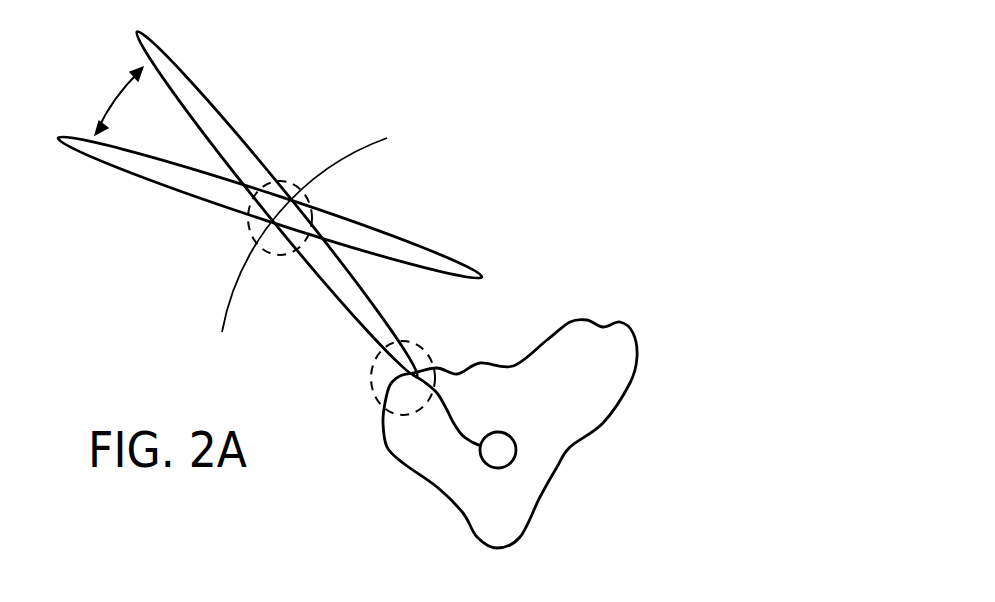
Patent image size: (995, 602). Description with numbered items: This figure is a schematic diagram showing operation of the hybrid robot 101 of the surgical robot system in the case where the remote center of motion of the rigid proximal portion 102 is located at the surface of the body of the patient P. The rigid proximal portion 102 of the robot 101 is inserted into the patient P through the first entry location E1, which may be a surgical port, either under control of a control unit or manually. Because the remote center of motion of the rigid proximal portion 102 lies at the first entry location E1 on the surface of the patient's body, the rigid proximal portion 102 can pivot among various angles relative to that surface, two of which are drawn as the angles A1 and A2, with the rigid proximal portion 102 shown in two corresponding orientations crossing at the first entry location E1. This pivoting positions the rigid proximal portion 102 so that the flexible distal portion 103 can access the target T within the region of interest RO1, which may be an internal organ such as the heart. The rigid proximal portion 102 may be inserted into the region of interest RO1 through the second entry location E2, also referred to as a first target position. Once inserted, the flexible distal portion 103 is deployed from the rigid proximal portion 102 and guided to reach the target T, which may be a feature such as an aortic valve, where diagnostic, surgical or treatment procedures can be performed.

The hybrid robot 101 is at (277, 198).
The rigid proximal portion 102 is at (113, 100).
The flexible distal portion 103 is at (460, 425).
The angle A1 is at (405, 252).
The angle A2 is at (355, 308).
The first entry location E1 is at (293, 183).
The second entry location E2 is at (428, 350).
The patient P is at (232, 293).
The region of interest RO1 is at (588, 320).
The target T is at (516, 452).